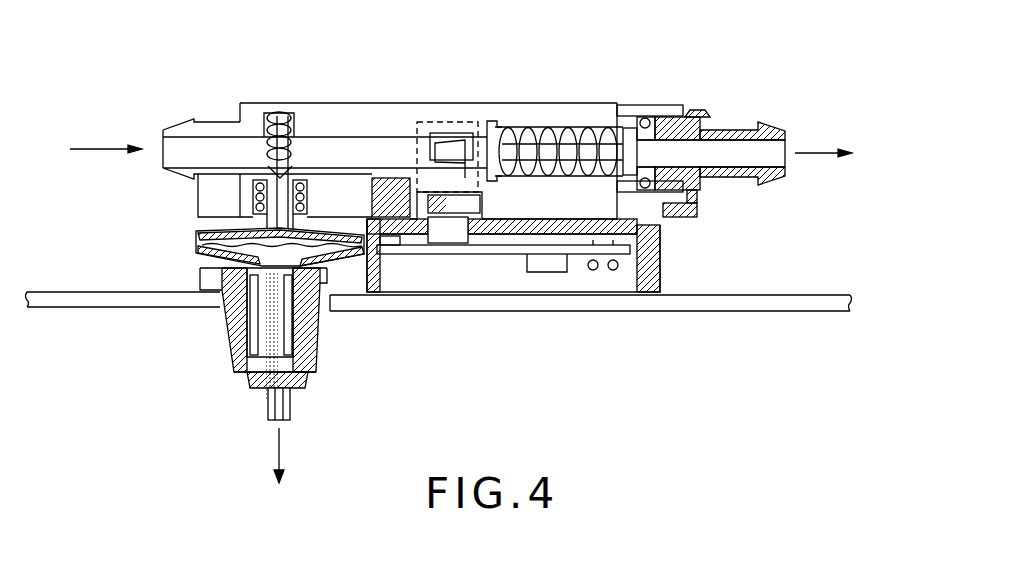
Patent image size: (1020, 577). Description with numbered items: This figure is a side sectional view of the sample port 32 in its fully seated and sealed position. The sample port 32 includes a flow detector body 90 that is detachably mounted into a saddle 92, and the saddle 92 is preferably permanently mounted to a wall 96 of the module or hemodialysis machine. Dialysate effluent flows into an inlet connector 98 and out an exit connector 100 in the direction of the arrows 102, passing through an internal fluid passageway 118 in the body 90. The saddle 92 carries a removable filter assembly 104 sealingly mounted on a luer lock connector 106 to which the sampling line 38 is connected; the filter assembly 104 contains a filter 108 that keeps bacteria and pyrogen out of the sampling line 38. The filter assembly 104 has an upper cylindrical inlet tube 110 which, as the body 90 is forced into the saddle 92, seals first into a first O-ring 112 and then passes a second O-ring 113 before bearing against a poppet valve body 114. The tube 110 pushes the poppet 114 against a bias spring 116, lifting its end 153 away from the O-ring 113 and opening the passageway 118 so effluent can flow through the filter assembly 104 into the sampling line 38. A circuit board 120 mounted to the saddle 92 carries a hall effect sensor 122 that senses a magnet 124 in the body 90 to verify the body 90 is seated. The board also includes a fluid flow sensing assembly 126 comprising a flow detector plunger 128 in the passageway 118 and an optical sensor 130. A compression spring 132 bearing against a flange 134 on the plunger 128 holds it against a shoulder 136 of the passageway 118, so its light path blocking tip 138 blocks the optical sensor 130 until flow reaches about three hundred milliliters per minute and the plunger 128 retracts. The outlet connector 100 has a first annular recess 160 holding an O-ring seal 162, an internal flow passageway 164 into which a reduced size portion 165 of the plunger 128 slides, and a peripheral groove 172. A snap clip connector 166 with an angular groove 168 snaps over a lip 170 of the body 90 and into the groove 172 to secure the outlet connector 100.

The sample port 32 is at (780, 100).
The sampling line 38 is at (290, 410).
The flow detector body 90 is at (325, 96).
The saddle 92 is at (670, 278).
The wall 96 is at (738, 306).
The inlet connector 98 is at (222, 121).
The exit connector 100 is at (787, 128).
The arrows 102 is at (92, 152).
The filter assembly 104 is at (172, 244).
The luer lock connector 106 is at (268, 392).
The filter 108 is at (210, 256).
The upper cylindrical inlet tube 110 is at (292, 213).
The first O-ring 112 is at (253, 203).
The second O-ring 113 is at (253, 185).
The poppet valve body 114 is at (277, 113).
The bias spring 116 is at (296, 138).
The internal fluid passageway 118 is at (162, 130).
The circuit board 120 is at (538, 258).
The hall effect sensor 122 is at (393, 258).
The magnet 124 is at (372, 184).
The fluid flow sensing assembly 126 is at (572, 88).
The flow detector plunger 128 is at (590, 143).
The optical sensor 130 is at (452, 255).
The compression spring 132 is at (543, 132).
The flange 134 is at (498, 128).
The shoulder 136 is at (473, 190).
The light path blocking tip 138 is at (447, 148).
The end of the poppet 153 is at (295, 165).
The first annular recess 160 is at (642, 189).
The O-ring seal 162 is at (647, 105).
The internal flow passageway 164 is at (762, 167).
The reduced size portion 165 is at (637, 152).
The snap clip connector 166 is at (693, 117).
The angular groove 168 is at (682, 218).
The lip 170 is at (700, 190).
The peripheral groove 172 is at (710, 130).